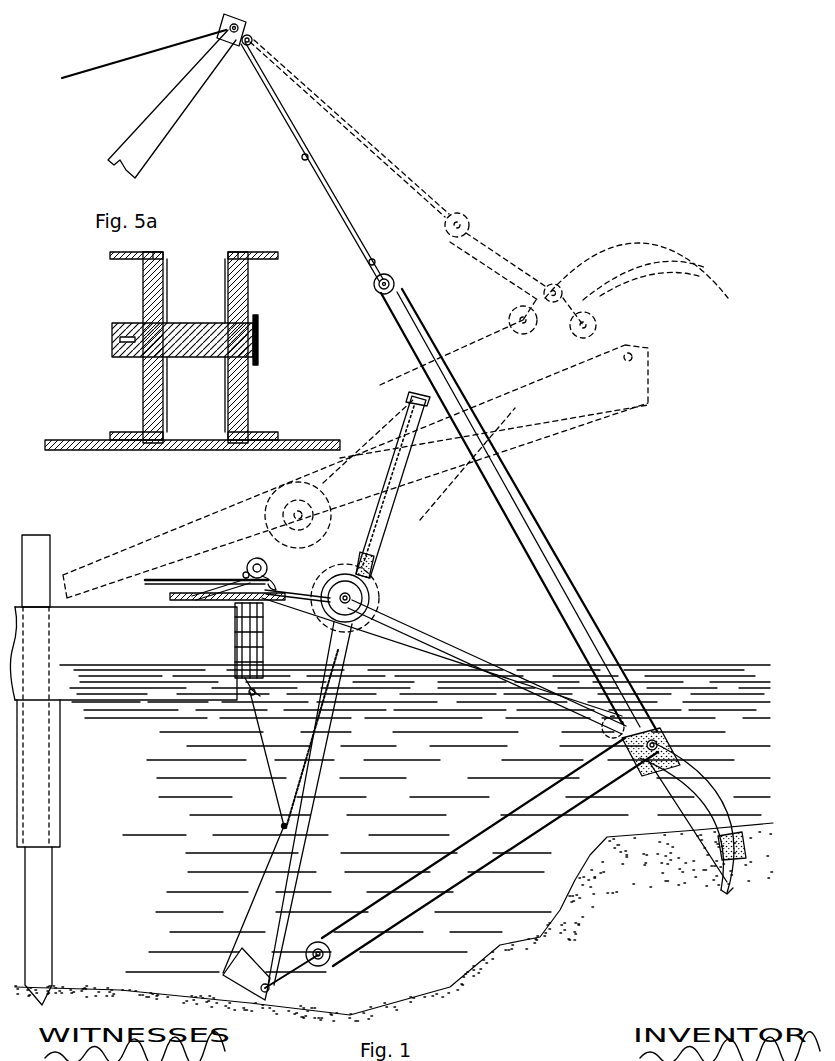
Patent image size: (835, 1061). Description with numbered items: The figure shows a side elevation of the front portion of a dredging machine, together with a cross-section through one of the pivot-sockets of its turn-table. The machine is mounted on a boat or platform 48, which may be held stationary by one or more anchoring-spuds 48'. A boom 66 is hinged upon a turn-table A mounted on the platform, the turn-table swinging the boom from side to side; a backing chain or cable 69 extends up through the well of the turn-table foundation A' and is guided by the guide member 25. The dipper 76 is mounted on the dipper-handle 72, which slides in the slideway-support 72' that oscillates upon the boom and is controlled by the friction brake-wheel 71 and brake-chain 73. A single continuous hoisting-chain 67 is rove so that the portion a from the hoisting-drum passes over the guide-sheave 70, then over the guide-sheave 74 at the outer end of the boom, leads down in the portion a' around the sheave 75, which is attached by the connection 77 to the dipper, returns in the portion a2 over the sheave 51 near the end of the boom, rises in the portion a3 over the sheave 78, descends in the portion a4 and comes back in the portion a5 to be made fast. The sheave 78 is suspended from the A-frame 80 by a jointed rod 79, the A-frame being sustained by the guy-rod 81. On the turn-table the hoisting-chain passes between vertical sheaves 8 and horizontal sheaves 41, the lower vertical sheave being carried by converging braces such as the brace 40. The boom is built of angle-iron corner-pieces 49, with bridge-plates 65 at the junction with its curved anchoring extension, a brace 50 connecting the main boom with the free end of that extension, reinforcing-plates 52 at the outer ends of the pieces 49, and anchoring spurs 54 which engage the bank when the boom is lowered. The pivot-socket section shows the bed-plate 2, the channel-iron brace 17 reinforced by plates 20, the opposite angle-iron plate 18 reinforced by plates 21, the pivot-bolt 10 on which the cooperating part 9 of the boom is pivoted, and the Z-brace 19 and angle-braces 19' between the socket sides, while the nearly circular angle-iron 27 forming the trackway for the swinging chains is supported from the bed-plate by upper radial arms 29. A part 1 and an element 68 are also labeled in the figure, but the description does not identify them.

In FIG. 1, the base of hoisting apparatus 1 is at (235, 607).
In FIG. 5a, the bed-plate 2 is at (94, 450).
In FIG. 1, the bed-plate 2 is at (226, 604).
In FIG. 1, the vertical sheaves 8 is at (268, 567).
In FIG. 1, the cooperating part of the boom 9 is at (262, 608).
In FIG. 5a, the pivot-bolt 10 is at (258, 341).
In FIG. 5a, the channel-iron brace 17 is at (143, 300).
In FIG. 1, the channel-iron brace 17 is at (172, 596).
In FIG. 5a, the angle-iron plate 18 is at (250, 398).
In FIG. 5a, the Z-brace 19 is at (196, 291).
In FIG. 5a, the angle-braces 19' is at (196, 394).
In FIG. 5a, the reinforcing-plates 20 is at (158, 258).
In FIG. 5a, the reinforcing plates 21 is at (238, 256).
In FIG. 1, the guide member 25 is at (262, 690).
In FIG. 1, the angle-iron track 27 is at (190, 581).
In FIG. 1, the upper radial arms 29 is at (244, 572).
In FIG. 1, the brace 40 is at (297, 582).
In FIG. 1, the horizontal sheaves 41 is at (225, 582).
In FIG. 1, the boat or platform 48 is at (123, 727).
In FIG. 1, the anchoring-spuds 48' is at (64, 770).
In FIG. 1, the angle-iron corner-pieces 49 is at (712, 776).
In FIG. 1, the brace 50 is at (680, 800).
In FIG. 1, the sheave 51 is at (668, 738).
In FIG. 1, the reinforcing-plates 52 is at (748, 846).
In FIG. 1, the spurs or penetrating devices 54 is at (735, 895).
In FIG. 1, the bridge-plates 65 is at (686, 745).
In FIG. 1, the boom 66 is at (442, 657).
In FIG. 1, the hoisting-chain 67 is at (170, 579).
In FIG. 1, the bearing 68 is at (172, 601).
In FIG. 1, the backing chain or cable 69 is at (268, 778).
In FIG. 1, the guide-sheave 70 is at (372, 590).
In FIG. 1, the friction brake-wheel 71 is at (376, 600).
In FIG. 1, the dipper-handle 72 is at (404, 485).
In FIG. 1, the slideway-support 72' is at (421, 566).
In FIG. 1, the brake-chain 73 is at (338, 758).
In FIG. 1, the guide-sheave 74 is at (626, 722).
In FIG. 1, the sheave 75 is at (332, 957).
In FIG. 1, the dipper 76 is at (238, 965).
In FIG. 1, the connection 77 is at (297, 966).
In FIG. 1, the sheave 78 is at (396, 280).
In FIG. 1, the jointed rod 79 is at (312, 161).
In FIG. 1, the A-frame 80 is at (146, 148).
In FIG. 1, the guy-rod 81 is at (90, 75).
In FIG. 1, the hoisting-chain portion a is at (194, 539).
In FIG. 1, the hoisting-chain portion a' is at (473, 838).
In FIG. 1, the hoisting-chain portion a2 is at (463, 877).
In FIG. 1, the hoisting-chain portion a3 is at (520, 496).
In FIG. 1, the hoisting-chain portion a4 is at (566, 590).
In FIG. 1, the hoisting-chain portion a5 is at (550, 553).
In FIG. 1, the turn-table A is at (399, 602).
In FIG. 1, the turn-table foundation A' is at (266, 640).